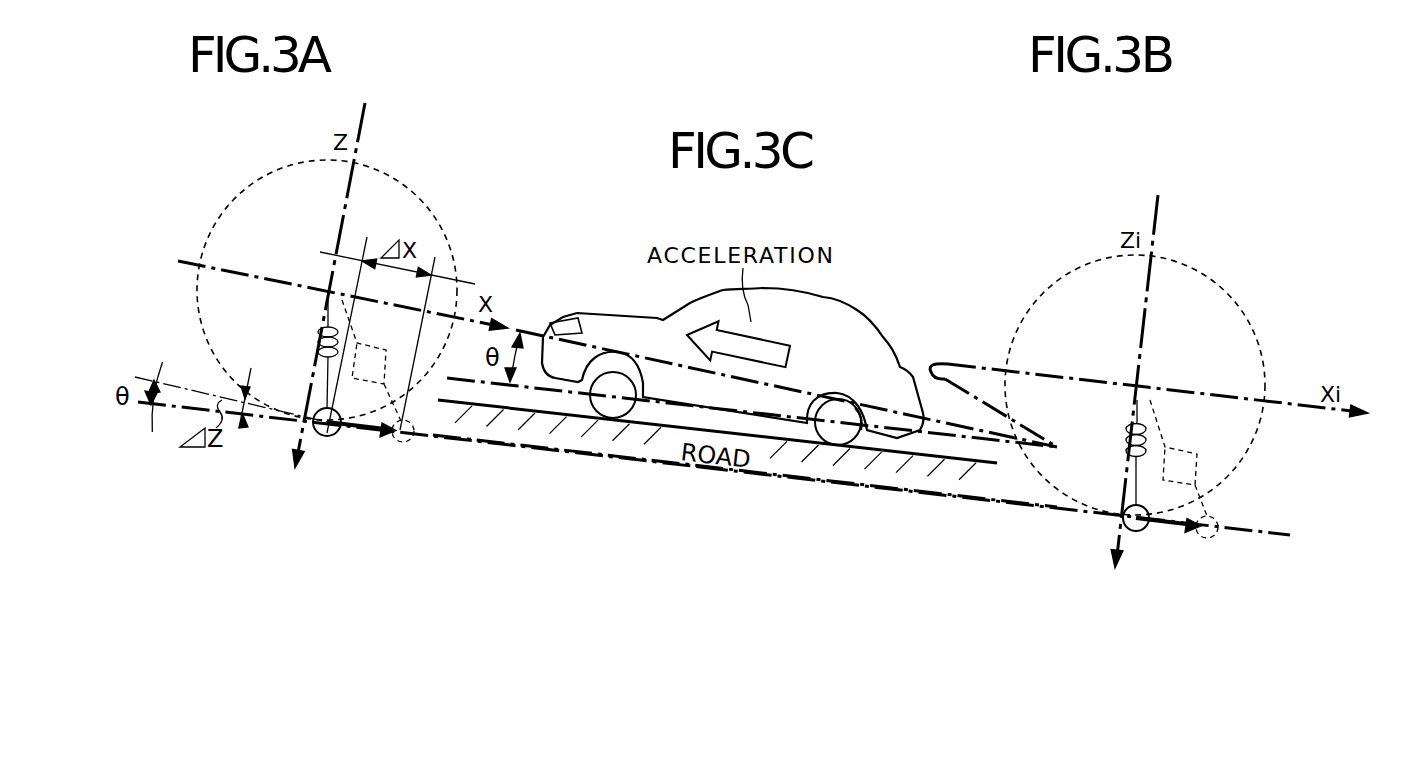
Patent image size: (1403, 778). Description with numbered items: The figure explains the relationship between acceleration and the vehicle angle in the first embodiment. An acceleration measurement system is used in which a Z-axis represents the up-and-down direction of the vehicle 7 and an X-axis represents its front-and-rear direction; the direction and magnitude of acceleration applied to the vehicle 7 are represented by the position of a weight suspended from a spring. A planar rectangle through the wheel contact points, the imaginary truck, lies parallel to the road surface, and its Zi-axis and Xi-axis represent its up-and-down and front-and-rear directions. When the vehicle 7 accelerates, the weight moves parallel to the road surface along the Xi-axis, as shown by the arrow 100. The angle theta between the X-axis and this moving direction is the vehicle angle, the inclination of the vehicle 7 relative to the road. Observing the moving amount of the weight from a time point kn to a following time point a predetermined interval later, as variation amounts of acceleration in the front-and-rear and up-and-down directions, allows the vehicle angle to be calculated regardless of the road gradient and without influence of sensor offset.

In FIG. 3A, the arrow 100 is at (358, 433).
In FIG. 3B, the arrow 100 is at (1165, 527).
In FIG. 3C, the vehicle 7 is at (838, 305).
In FIG. 3A, the time point kn is at (325, 437).